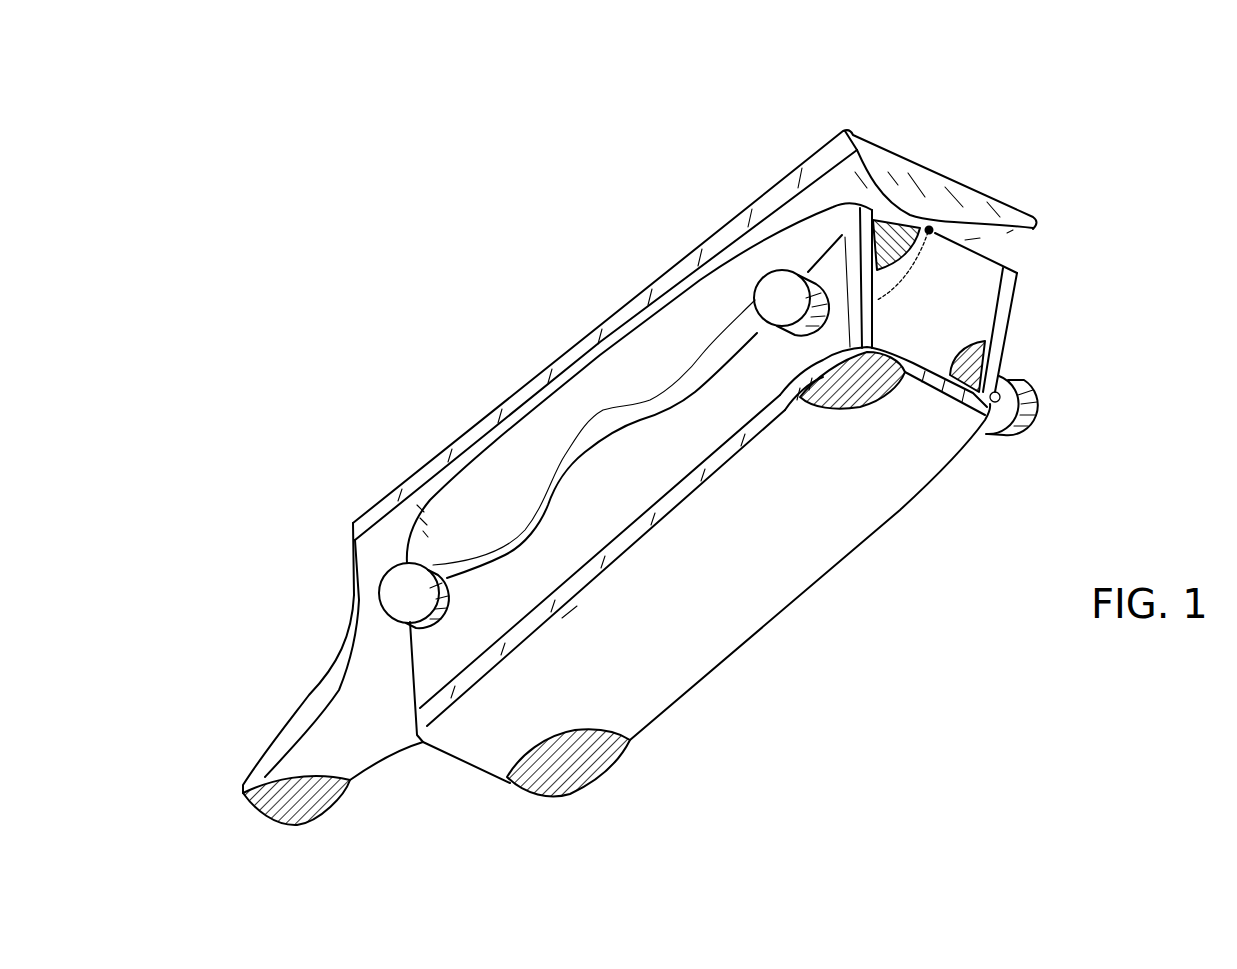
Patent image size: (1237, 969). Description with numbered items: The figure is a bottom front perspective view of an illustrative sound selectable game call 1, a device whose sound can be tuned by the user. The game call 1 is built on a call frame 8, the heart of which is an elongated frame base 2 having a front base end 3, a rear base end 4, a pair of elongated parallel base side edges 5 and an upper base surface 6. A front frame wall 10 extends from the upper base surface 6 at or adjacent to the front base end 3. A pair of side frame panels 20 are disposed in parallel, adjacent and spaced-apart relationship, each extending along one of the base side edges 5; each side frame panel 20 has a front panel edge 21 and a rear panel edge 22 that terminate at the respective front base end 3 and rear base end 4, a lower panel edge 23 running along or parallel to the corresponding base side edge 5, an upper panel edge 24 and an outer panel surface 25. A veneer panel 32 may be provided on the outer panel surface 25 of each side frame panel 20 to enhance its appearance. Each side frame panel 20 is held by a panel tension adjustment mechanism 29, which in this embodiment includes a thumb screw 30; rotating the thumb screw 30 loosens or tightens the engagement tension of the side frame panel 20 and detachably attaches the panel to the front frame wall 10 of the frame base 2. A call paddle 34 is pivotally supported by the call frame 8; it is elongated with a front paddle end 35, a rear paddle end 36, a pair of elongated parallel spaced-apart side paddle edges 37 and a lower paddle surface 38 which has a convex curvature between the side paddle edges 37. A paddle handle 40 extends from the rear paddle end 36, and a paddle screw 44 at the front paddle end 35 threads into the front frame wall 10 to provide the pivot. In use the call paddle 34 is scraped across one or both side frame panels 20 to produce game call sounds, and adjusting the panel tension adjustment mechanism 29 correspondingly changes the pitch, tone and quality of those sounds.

The sound selectable game call 1 is at (699, 435).
The frame base 2 is at (611, 467).
The front base end 3 is at (942, 355).
The rear base end 4 is at (453, 760).
The base side edges 5 is at (690, 491).
The upper base surface 6 is at (536, 582).
The call frame 8 is at (741, 682).
The front frame wall 10 is at (975, 290).
The side frame panels 20 is at (432, 445).
The front panel edge 21 is at (930, 230).
The rear panel edge 22 is at (427, 673).
The lower panel edge 23 is at (757, 440).
The upper panel edge 24 is at (545, 393).
The outer panel surface 25 is at (657, 333).
The panel tension adjustment mechanism 29 is at (760, 287).
The thumb screw 30 is at (640, 392).
The veneer panel 32 is at (427, 648).
The call paddle 34 is at (755, 187).
The front paddle end 35 is at (923, 172).
The rear paddle end 36 is at (352, 530).
The side paddle edges 37 is at (578, 343).
The lower paddle surface 38 is at (808, 160).
The paddle handle 40 is at (247, 782).
The paddle screw 44 is at (873, 197).